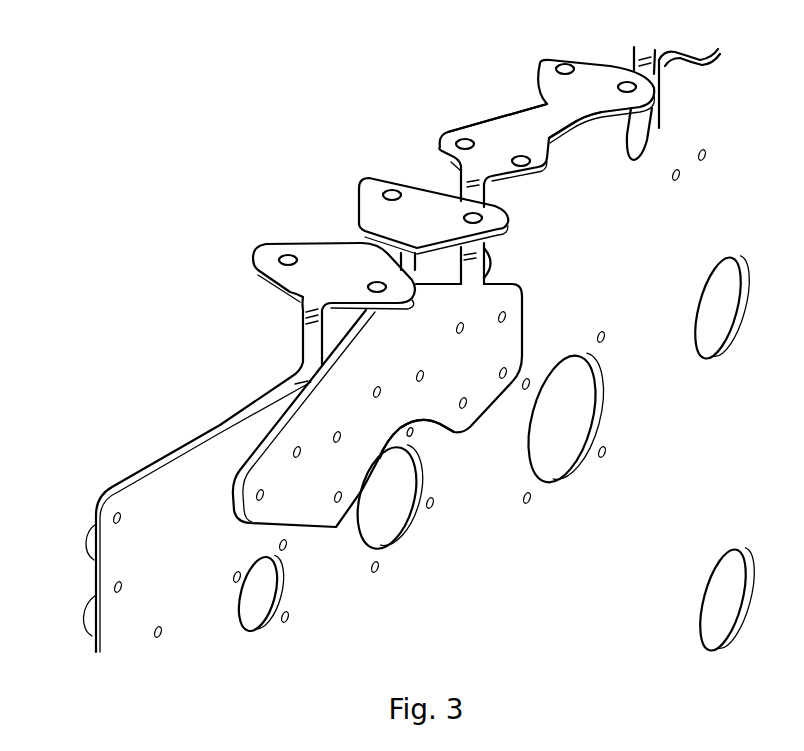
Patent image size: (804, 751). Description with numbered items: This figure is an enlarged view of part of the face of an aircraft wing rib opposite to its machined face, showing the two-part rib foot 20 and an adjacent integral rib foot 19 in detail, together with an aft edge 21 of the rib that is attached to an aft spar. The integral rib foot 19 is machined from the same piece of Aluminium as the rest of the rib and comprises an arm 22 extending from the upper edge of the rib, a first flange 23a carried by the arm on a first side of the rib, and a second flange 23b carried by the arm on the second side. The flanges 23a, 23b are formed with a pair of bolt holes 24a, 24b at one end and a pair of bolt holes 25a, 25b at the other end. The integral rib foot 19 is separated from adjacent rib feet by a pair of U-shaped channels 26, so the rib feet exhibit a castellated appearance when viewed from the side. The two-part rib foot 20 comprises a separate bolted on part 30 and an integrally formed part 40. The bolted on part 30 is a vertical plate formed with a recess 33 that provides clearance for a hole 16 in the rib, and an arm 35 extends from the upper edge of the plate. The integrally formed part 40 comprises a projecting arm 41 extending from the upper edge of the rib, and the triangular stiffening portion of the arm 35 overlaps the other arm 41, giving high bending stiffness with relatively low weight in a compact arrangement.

The hole 16 is at (394, 514).
The integral rib foot 19 is at (420, 82).
The two-part rib foot 20 is at (293, 190).
The aft edge 21 is at (92, 588).
The arm 22 is at (517, 154).
The first flange 23a is at (523, 124).
The second flange 23b is at (605, 115).
The bolt hole 24a is at (454, 137).
The bolt hole 24b is at (523, 165).
The bolt hole 25a is at (563, 66).
The bolt hole 25b is at (625, 82).
The U-shaped channel 26 is at (642, 141).
The bolted on part 30 is at (467, 453).
The recess 33 is at (400, 428).
The arm 35 is at (433, 278).
The integrally formed part 40 is at (274, 308).
The projecting arm 41 is at (333, 322).